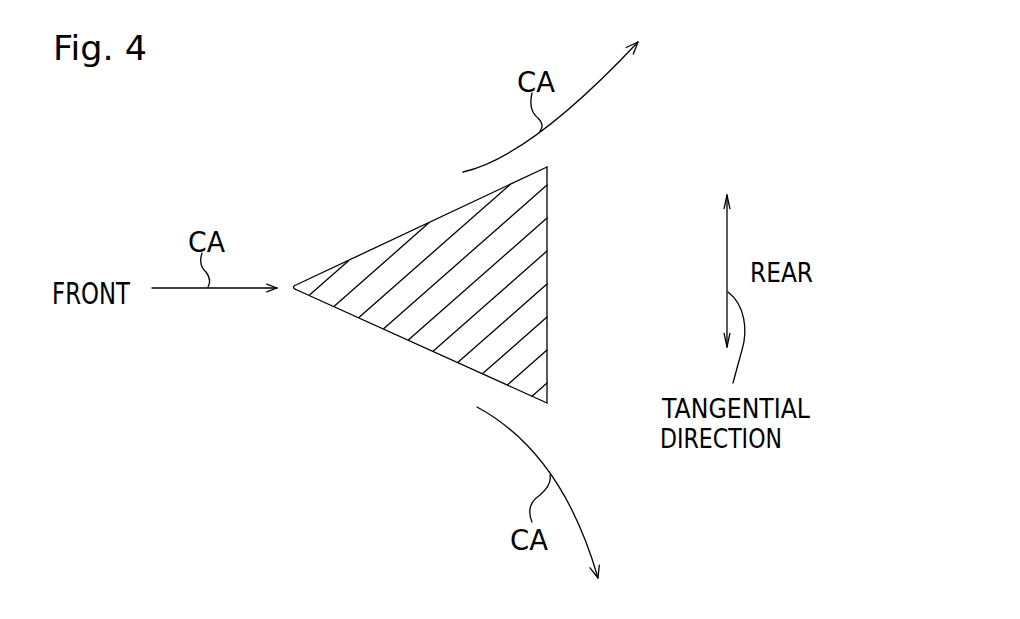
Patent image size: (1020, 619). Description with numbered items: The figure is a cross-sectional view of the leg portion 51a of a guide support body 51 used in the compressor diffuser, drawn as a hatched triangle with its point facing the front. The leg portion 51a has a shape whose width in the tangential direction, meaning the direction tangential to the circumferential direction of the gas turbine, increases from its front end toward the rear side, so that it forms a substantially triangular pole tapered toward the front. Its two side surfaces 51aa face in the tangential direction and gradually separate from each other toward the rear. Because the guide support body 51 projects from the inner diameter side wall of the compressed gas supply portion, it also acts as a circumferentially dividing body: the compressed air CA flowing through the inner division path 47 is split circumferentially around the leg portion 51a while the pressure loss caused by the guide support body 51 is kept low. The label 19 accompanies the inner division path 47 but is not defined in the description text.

The inner division path 47 is at (261, 423).
The rotor 19 is at (262, 460).
The guide support body 51 is at (466, 283).
The leg portion 51a is at (548, 288).
The side surfaces 51aa is at (355, 258).